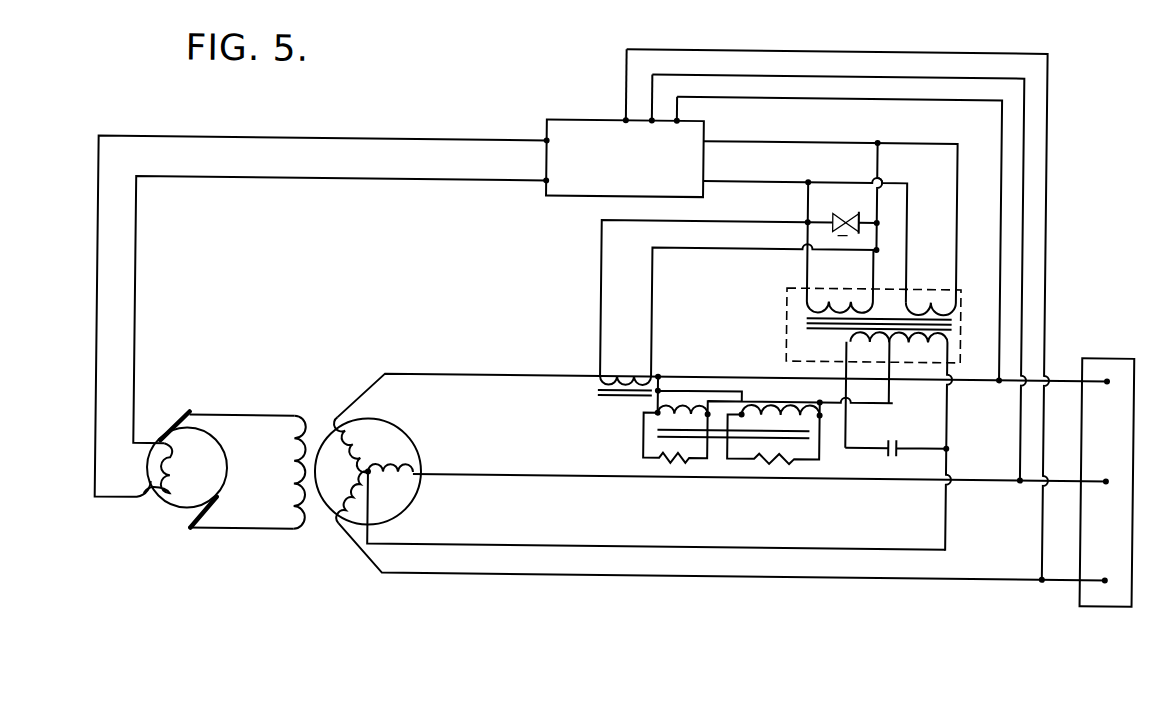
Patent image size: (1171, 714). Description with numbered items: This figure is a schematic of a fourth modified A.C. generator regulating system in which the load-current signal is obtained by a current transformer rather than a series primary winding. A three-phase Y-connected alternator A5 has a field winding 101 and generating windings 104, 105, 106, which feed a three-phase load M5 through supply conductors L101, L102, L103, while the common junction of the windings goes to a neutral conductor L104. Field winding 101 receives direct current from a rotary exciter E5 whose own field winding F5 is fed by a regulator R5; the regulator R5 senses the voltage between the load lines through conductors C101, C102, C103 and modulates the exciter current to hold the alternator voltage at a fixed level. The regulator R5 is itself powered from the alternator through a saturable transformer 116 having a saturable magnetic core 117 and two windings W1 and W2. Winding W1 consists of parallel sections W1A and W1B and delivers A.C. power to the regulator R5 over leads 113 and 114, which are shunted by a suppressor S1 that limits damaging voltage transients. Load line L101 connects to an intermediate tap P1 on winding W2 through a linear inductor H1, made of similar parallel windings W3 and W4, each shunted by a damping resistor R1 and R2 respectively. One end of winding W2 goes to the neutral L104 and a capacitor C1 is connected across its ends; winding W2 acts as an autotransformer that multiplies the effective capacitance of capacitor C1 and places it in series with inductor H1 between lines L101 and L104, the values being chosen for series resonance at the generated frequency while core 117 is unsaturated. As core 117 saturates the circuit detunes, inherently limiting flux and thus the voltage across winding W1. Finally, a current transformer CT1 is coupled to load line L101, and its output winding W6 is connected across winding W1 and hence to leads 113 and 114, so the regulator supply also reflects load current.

The regulator R5 is at (582, 120).
The lead 113 is at (746, 141).
The lead 114 is at (726, 182).
The conductor C101 is at (1002, 128).
The conductor C102 is at (1024, 155).
The conductor C103 is at (1046, 185).
The suppressor S1 is at (846, 219).
The winding W1 is at (882, 228).
The winding section W1A is at (846, 297).
The winding section W1B is at (926, 298).
The saturable transformer 116 is at (786, 314).
The saturable magnetic core 117 is at (806, 328).
The intermediate tap P1 is at (890, 356).
The winding W2 is at (928, 354).
The capacitor C1 is at (892, 447).
The current transformer CT1 is at (701, 316).
The output winding W6 is at (627, 376).
The linear inductor H1 is at (733, 398).
The winding W3 is at (678, 408).
The winding W4 is at (808, 410).
The damping resistor R1 is at (664, 458).
The damping resistor R2 is at (797, 456).
The supply conductor L101 is at (524, 374).
The supply conductor L102 is at (590, 478).
The supply conductor L103 is at (618, 579).
The neutral conductor L104 is at (464, 544).
The three-phase load M5 is at (1112, 353).
The rotary exciter E5 is at (320, 334).
The field winding F5 is at (152, 489).
The field winding 101 is at (286, 469).
The alternator A5 is at (379, 424).
The generating winding 104 is at (358, 445).
The generating winding 105 is at (404, 468).
The generating winding 106 is at (342, 490).